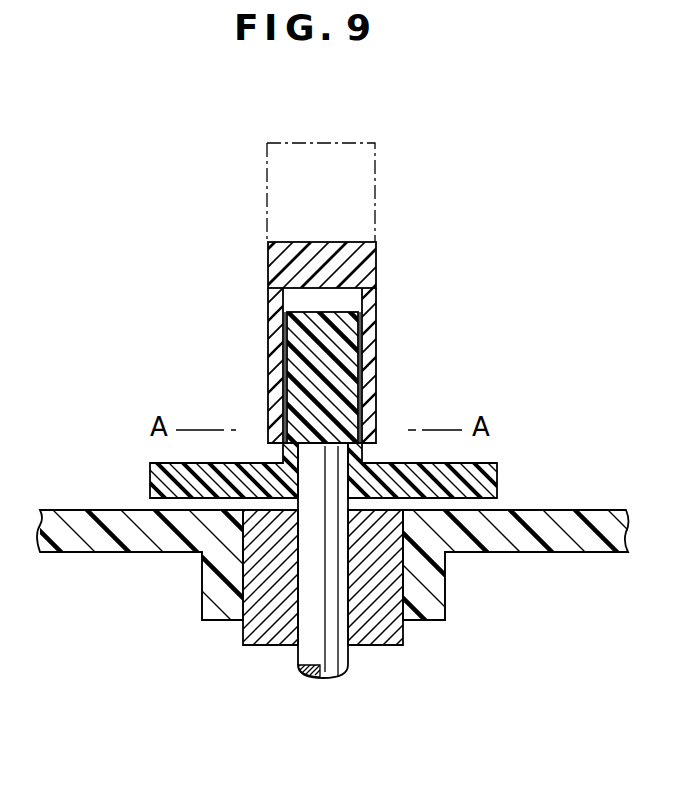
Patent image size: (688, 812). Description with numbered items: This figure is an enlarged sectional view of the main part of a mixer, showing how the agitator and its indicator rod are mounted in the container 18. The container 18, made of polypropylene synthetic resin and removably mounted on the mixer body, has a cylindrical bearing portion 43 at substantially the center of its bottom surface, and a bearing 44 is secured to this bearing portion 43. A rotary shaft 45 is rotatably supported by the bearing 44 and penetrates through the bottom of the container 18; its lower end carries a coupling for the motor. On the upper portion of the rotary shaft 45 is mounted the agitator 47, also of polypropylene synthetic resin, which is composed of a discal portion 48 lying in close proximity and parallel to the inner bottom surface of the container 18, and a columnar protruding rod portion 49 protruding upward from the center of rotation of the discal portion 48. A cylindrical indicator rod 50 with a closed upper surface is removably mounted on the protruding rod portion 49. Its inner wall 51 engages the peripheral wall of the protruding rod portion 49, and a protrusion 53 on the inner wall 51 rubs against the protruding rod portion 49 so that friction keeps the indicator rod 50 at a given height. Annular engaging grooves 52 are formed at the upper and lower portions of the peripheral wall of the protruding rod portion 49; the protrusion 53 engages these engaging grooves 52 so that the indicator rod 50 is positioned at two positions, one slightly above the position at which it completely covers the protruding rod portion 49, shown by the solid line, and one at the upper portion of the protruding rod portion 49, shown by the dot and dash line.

The container 18 is at (530, 545).
The bearing portion 43 is at (213, 588).
The bearing 44 is at (268, 627).
The rotary shaft 45 is at (293, 662).
The agitator 47 is at (410, 394).
The discal portion 48 is at (497, 468).
The protruding rod portion 49 is at (340, 372).
The indicator rod 50 is at (318, 242).
The inner wall 51 is at (377, 314).
The engaging grooves 52 is at (271, 331).
The protrusion 53 is at (272, 438).